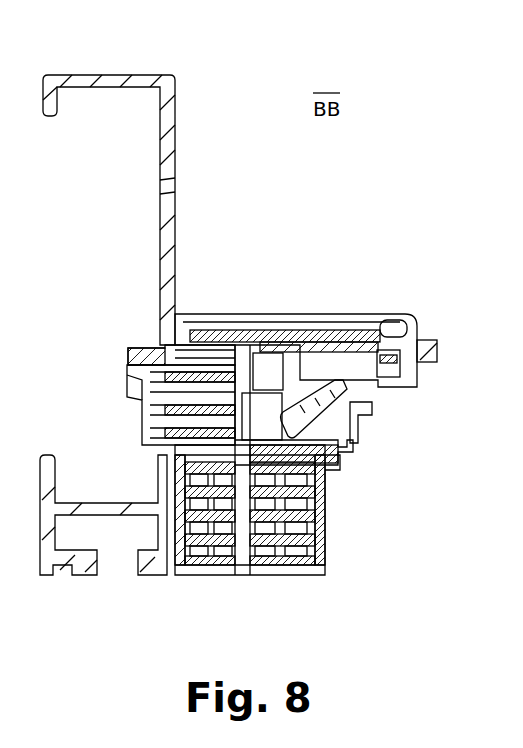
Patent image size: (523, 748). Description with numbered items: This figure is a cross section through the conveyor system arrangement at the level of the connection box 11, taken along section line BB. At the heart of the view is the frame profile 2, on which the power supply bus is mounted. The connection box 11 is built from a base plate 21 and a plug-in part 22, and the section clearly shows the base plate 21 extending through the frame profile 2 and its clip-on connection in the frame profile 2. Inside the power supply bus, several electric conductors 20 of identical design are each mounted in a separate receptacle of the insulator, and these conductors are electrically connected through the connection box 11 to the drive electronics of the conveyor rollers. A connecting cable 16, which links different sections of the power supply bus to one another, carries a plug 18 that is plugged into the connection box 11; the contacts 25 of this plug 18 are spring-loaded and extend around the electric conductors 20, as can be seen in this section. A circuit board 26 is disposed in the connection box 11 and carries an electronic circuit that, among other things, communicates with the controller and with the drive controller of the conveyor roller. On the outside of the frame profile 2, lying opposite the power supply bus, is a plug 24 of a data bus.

The frame profile 2 is at (160, 250).
The connection box 11 is at (321, 409).
The connecting cable 16 is at (293, 552).
The plug 18 is at (285, 541).
The electric conductors 20 is at (188, 572).
The base plate 21 is at (150, 350).
The plug-in part 22 is at (413, 375).
The plug of a data bus 24 is at (143, 425).
The contacts 25 is at (213, 553).
The circuit board 26 is at (258, 332).